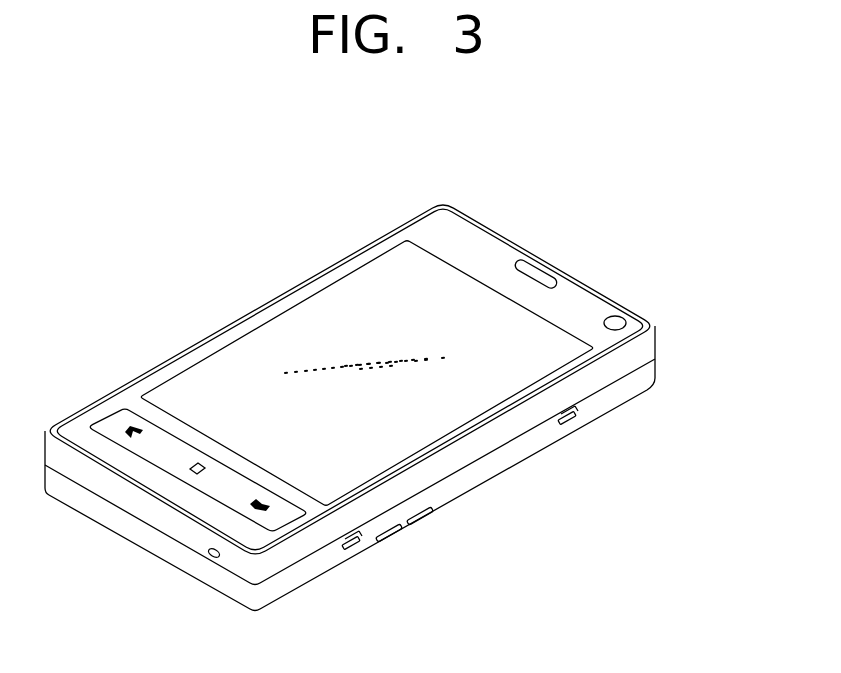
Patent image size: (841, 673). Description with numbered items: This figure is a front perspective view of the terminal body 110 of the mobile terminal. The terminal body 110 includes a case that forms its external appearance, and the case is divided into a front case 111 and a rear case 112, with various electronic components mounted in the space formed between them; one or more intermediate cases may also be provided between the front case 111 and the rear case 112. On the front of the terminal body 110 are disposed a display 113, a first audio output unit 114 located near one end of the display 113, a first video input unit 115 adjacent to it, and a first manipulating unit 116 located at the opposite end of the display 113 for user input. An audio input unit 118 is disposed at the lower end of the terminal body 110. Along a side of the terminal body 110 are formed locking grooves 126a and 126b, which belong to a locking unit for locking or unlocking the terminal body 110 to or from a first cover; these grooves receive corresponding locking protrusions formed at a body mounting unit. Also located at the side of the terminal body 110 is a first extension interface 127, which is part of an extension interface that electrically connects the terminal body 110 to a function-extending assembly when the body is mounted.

The terminal body 110 is at (228, 303).
The front case 111 is at (654, 343).
The rear case 112 is at (654, 372).
The display 113 is at (362, 287).
The first audio output unit 114 is at (537, 273).
The first video input unit 115 is at (613, 318).
The first manipulating unit 116 is at (112, 418).
The audio input unit 118 is at (212, 558).
The locking groove 126a is at (573, 426).
The locking groove 126b is at (356, 549).
The first extension interface 127 is at (424, 520).